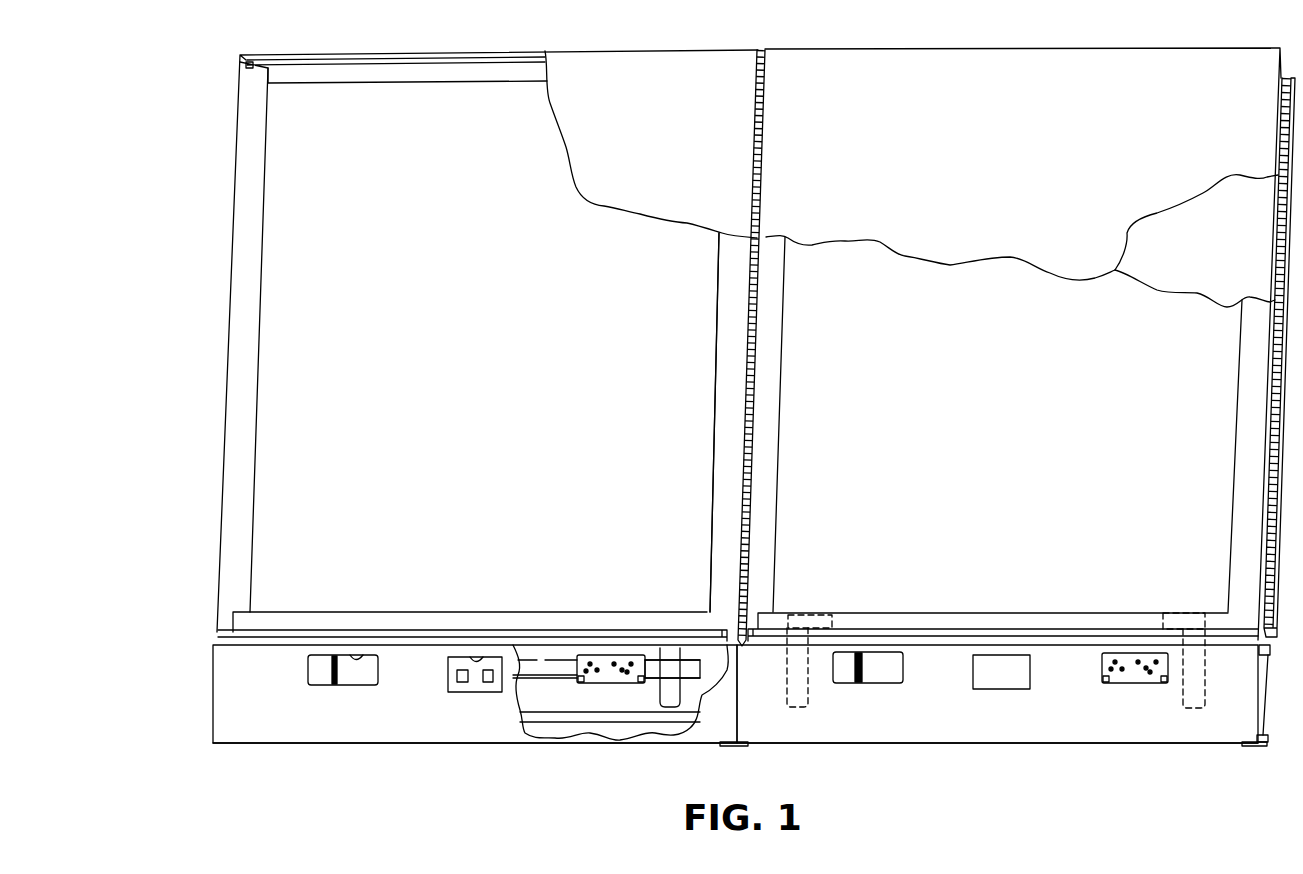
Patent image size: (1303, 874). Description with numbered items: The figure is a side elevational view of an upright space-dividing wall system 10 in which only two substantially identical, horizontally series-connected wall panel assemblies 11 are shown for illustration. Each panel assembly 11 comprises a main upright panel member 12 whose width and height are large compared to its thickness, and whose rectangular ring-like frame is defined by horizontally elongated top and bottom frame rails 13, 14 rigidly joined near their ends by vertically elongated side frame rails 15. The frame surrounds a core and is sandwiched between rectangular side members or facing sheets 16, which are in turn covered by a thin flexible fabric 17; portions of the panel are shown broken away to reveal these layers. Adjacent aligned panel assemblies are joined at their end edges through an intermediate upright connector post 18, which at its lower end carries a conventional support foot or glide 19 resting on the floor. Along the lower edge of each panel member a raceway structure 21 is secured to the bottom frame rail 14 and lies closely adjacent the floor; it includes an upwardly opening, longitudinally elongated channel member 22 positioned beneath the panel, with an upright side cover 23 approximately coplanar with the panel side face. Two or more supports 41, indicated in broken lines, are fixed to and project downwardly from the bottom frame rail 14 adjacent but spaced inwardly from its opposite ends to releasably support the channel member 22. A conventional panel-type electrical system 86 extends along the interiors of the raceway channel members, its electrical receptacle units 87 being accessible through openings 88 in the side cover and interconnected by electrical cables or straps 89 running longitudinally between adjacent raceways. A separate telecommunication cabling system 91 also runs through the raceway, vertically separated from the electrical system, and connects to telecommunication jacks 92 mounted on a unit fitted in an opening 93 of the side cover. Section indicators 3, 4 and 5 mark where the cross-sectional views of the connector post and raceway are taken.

The space-dividing wall system 10 is at (210, 233).
The wall panel assembly 11 is at (394, 45).
The main upright panel member 12 is at (628, 103).
The top frame rail 13 is at (363, 72).
The bottom frame rail 14 is at (412, 622).
The side frame rail 15 is at (253, 248).
The side member or facing sheet 16 is at (1196, 393).
The fabric covering 17 is at (940, 217).
The connector post 18 is at (752, 320).
The support foot or glide 19 is at (1256, 707).
The raceway structure 21 is at (331, 756).
The channel member 22 is at (223, 700).
The side cover 23 is at (370, 695).
The support 41 is at (670, 688).
The panel-type electrical system 86 is at (553, 650).
The electrical receptacle unit 87 is at (628, 660).
The opening 88 is at (355, 660).
The electrical cable or strap 89 is at (563, 668).
The telecommunication cabling system 91 is at (538, 717).
The telecommunication jack 92 is at (462, 675).
The opening 93 is at (483, 662).
The section line 3- 3 is at (825, 205).
The section line 4- 4 is at (824, 553).
The section line 5- 5 is at (1181, 723).